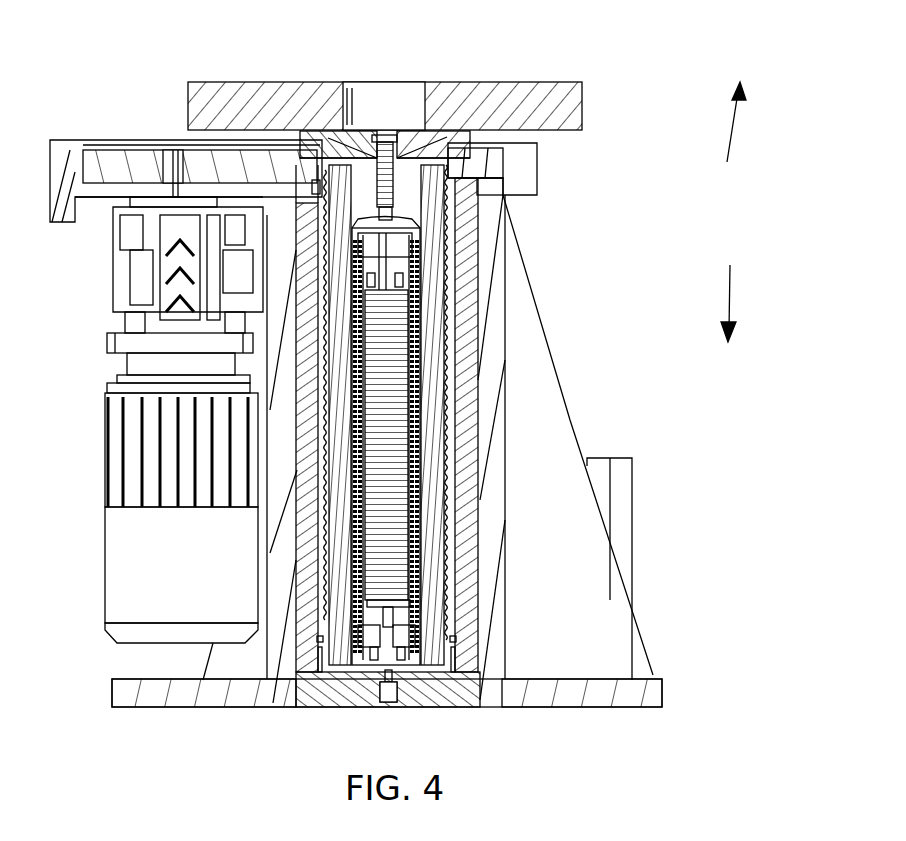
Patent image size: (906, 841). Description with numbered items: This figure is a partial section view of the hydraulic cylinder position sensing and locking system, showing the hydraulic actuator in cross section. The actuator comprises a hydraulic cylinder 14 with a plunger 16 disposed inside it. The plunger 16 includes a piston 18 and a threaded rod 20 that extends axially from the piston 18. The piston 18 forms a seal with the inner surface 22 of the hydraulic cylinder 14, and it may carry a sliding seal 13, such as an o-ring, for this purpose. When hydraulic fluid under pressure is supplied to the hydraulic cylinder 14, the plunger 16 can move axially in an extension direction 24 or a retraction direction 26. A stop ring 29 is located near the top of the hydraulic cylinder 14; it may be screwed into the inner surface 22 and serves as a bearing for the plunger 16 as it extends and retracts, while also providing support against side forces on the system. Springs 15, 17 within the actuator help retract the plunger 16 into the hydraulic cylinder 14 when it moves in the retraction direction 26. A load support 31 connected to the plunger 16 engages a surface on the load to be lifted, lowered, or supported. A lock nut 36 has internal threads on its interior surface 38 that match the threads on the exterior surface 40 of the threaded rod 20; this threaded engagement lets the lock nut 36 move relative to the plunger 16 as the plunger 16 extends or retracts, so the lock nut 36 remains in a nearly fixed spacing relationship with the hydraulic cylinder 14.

The sliding seal 13 is at (317, 643).
The hydraulic cylinder 14 is at (465, 348).
The spring 15 is at (372, 610).
The plunger 16 is at (436, 443).
The spring 17 is at (362, 657).
The piston 18 is at (440, 652).
The threaded rod 20 is at (433, 306).
The inner surface 22 is at (447, 397).
The extension direction 24 is at (755, 112).
The retraction direction 26 is at (751, 303).
The stop ring 29 is at (316, 188).
The load support 31 is at (222, 110).
The lock nut 36 is at (490, 160).
The interior surface 38 is at (450, 174).
The exterior surface 40 is at (452, 223).